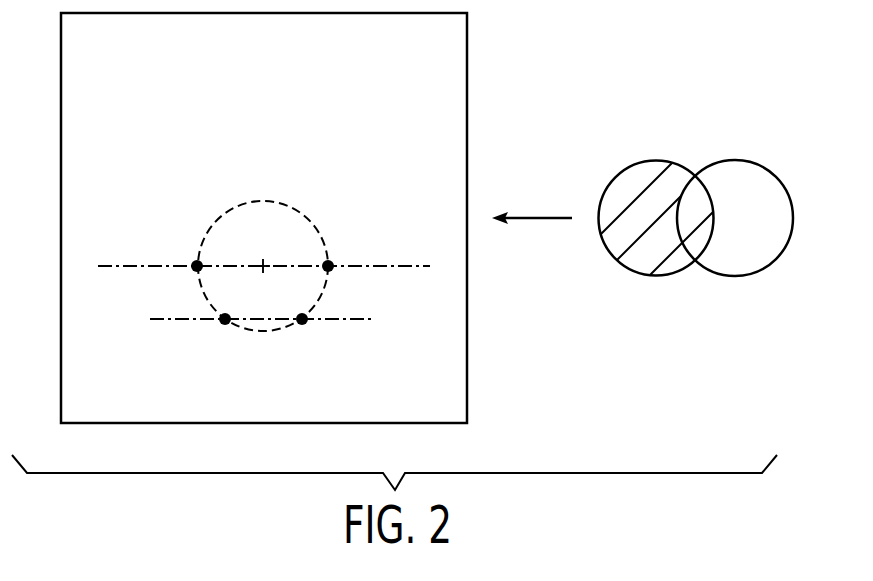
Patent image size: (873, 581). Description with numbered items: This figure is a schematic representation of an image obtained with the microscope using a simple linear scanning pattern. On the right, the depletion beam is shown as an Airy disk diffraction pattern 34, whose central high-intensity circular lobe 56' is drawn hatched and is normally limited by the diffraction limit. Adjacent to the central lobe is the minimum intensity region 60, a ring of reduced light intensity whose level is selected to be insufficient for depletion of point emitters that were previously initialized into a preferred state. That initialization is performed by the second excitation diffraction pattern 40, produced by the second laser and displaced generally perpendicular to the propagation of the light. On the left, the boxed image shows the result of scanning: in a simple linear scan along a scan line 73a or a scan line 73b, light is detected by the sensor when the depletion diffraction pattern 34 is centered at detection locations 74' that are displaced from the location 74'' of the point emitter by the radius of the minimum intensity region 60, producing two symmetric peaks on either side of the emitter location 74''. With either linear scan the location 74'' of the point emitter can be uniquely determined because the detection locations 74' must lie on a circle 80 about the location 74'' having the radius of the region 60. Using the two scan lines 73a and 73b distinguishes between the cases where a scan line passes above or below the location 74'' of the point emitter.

The circle 80 is at (308, 217).
The scan line 73a is at (378, 266).
The scan line 73b is at (176, 322).
The location of the point emitter 74'' is at (205, 243).
The detection locations 74' is at (264, 328).
The central high-intensity circular lobe 56' is at (628, 210).
The minimum intensity region 60 is at (777, 176).
The second excitation diffraction pattern 40 is at (592, 256).
The Airy disk diffraction pattern 34 is at (697, 278).